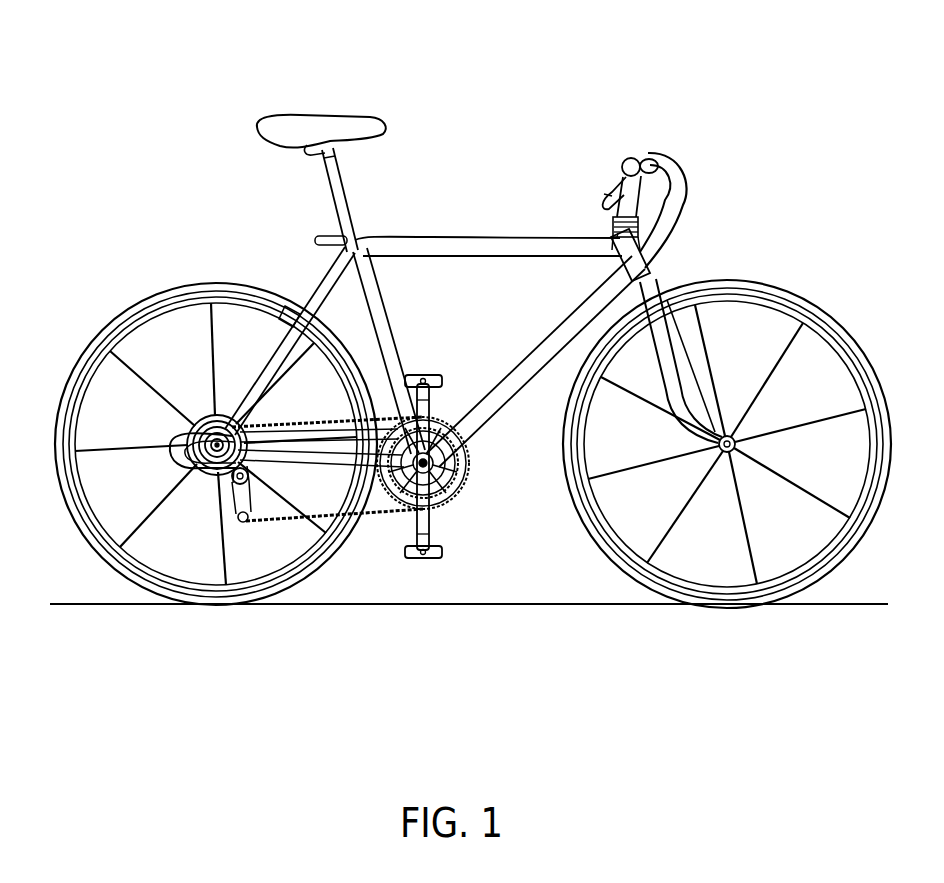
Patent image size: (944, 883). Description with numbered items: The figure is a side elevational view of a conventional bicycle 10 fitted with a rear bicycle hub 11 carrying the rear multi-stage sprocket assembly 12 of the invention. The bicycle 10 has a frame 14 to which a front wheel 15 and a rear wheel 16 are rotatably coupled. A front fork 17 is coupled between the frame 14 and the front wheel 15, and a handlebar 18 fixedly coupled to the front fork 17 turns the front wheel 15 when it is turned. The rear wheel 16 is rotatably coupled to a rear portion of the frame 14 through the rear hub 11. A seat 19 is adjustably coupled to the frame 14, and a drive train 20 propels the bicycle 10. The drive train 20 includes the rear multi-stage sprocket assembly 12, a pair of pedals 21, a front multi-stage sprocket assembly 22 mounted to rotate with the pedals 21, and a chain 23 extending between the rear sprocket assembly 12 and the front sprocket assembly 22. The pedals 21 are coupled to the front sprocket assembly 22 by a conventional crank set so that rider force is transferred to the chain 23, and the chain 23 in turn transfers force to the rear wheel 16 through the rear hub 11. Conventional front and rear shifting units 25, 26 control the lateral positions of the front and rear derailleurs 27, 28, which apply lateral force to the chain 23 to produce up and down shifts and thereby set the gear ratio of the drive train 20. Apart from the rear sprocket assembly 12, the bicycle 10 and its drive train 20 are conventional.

The bicycle 10 is at (683, 119).
The rear bicycle hub 11 is at (195, 405).
The rear multi-stage sprocket assembly 12 is at (226, 408).
The frame 14 is at (483, 247).
The front wheel 15 is at (783, 283).
The rear wheel 16 is at (177, 285).
The front fork 17 is at (668, 284).
The handlebar 18 is at (623, 158).
The seat 19 is at (325, 118).
The drive train 20 is at (460, 528).
The pedals 21 is at (425, 376).
The front multi-stage sprocket assembly 22 is at (470, 462).
The chain 23 is at (382, 521).
The front shifting unit 25 is at (719, 189).
The rear shifting unit 26 is at (652, 155).
The front derailleur 27 is at (385, 386).
The rear derailleur 28 is at (228, 518).